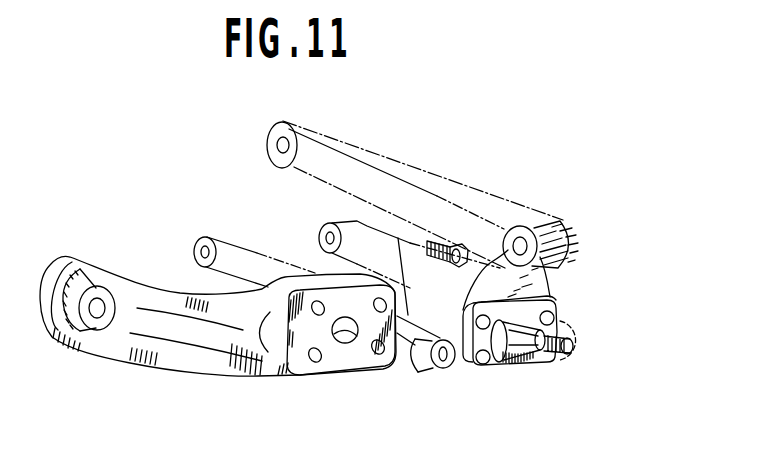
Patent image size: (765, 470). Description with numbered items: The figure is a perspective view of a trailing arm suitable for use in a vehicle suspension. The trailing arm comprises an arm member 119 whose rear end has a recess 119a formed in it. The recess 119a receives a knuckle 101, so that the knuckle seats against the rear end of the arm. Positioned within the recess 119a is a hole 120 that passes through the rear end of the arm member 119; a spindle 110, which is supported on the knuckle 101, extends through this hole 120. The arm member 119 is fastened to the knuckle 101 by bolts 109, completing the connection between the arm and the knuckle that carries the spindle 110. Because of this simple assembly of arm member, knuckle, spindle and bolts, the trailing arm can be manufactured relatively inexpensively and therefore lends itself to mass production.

The knuckle 101 is at (553, 318).
The bolts 109 is at (464, 244).
The spindle 110 is at (521, 364).
The arm member 119 is at (187, 357).
The recess 119a is at (322, 378).
The hole 120 is at (347, 343).